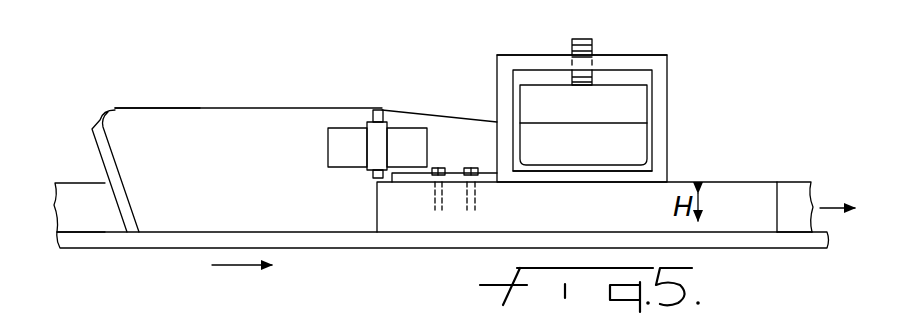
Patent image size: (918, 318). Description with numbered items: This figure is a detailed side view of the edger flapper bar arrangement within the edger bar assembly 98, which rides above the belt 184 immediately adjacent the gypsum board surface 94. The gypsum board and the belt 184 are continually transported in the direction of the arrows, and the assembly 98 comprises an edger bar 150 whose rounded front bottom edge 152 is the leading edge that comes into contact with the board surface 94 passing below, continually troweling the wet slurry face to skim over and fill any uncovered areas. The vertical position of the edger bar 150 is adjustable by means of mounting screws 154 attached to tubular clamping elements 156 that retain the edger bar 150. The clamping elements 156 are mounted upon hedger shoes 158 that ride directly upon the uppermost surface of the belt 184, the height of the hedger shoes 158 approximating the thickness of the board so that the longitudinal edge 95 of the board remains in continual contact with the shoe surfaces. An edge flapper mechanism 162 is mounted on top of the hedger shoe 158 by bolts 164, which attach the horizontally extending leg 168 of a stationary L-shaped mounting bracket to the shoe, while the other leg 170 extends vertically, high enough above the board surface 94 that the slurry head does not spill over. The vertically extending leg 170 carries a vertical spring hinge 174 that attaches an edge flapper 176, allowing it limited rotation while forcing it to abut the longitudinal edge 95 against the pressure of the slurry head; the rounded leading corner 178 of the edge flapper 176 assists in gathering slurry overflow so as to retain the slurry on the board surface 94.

The edger bar assembly 98 is at (556, 42).
The edger bar 150 is at (630, 107).
The rounded front bottom edge 152 is at (520, 158).
The mounting screws 154 is at (587, 38).
The tubular clamping elements 156 is at (660, 55).
The hedger shoes 158 is at (738, 193).
The edge flapper mechanism 162 is at (242, 103).
The bolts 164 is at (457, 218).
The horizontally extending leg 168 is at (408, 177).
The vertically extending leg 170 is at (443, 120).
The vertical spring hinge 174 is at (382, 108).
The edge flapper 176 is at (162, 122).
The rounded leading corner 178 is at (92, 123).
The belt 184 is at (167, 246).
The gypsum board surface 94 is at (73, 183).
The longitudinal edge 95 is at (72, 212).